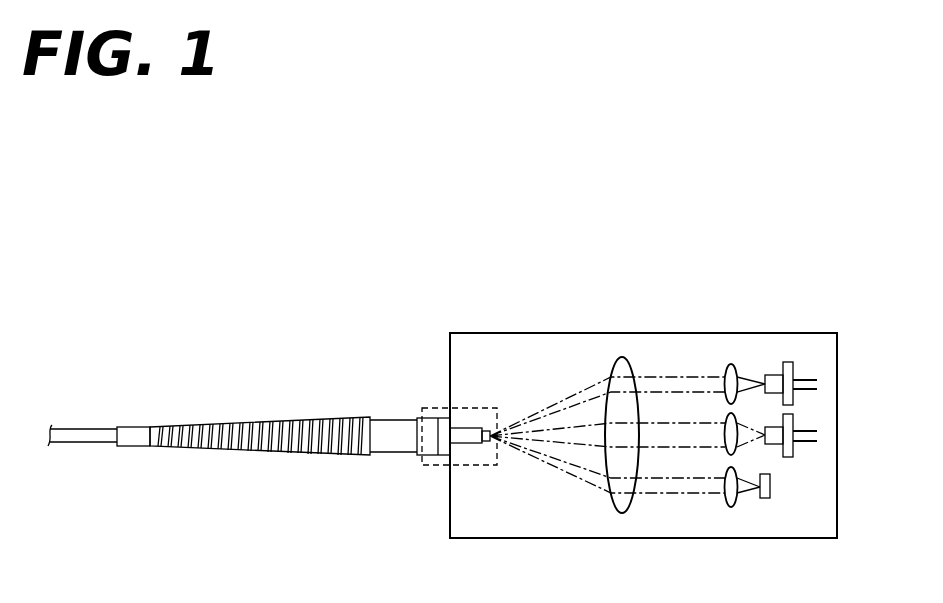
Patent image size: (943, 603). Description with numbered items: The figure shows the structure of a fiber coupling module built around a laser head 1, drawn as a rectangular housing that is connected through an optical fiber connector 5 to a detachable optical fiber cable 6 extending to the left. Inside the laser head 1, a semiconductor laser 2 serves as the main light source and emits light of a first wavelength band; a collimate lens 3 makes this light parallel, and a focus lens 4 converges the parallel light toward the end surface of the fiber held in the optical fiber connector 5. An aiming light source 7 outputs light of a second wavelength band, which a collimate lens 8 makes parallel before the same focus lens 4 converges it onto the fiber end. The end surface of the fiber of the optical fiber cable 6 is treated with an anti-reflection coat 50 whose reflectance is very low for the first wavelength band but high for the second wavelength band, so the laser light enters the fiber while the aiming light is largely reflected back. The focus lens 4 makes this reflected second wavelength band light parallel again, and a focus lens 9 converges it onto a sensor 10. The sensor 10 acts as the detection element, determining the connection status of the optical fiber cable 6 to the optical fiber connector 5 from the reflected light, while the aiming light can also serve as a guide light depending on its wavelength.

The laser head 1 is at (483, 333).
The semiconductor laser 2 is at (793, 450).
The collimate lens 3 is at (734, 420).
The focus lens 4 is at (620, 357).
The optical fiber connector 5 is at (428, 407).
The optical fiber cable 6 is at (240, 423).
The aiming light source 7 is at (788, 362).
The collimate lens 8 is at (731, 364).
The focus lens 9 is at (731, 507).
The sensor 10 is at (765, 498).
The anti-reflection coat 50 is at (483, 445).